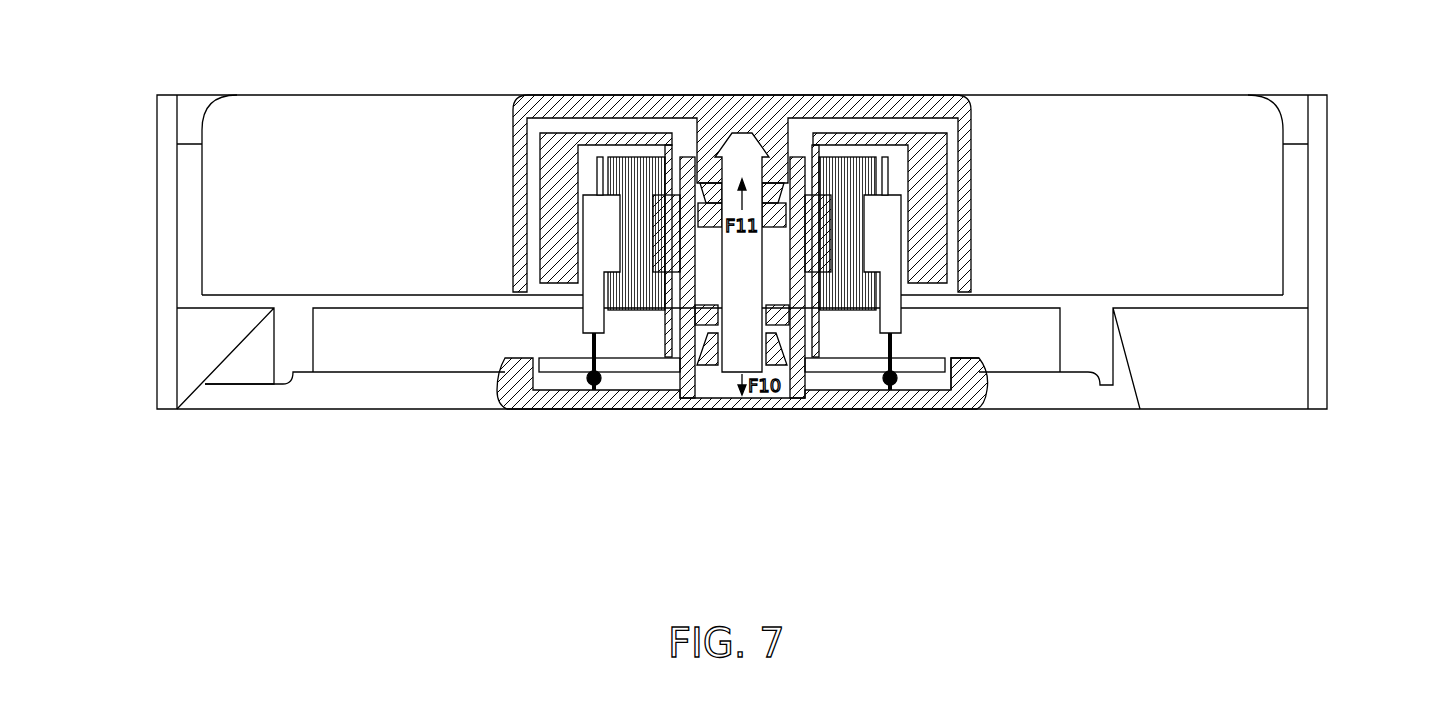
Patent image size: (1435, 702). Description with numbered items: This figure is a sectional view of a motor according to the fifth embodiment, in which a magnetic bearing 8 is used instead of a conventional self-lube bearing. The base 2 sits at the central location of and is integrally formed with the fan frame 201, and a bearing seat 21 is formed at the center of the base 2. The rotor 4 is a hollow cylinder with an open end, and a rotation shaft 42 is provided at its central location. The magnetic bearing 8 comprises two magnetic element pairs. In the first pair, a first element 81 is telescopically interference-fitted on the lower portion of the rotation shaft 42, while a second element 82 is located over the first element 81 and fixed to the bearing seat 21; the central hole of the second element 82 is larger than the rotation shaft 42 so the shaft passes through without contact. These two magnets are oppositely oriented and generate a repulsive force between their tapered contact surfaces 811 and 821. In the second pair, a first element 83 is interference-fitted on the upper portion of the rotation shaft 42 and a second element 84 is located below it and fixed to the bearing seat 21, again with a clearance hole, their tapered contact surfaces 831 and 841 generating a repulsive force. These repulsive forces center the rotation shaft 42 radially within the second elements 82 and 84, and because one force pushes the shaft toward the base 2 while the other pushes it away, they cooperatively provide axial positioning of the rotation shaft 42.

The base 2 is at (931, 412).
The bearing seat 21 is at (810, 386).
The fan frame 201 is at (1327, 356).
The rotor 4 is at (888, 95).
The rotation shaft 42 is at (745, 134).
The magnetic bearing 8 is at (743, 331).
The first element 81 is at (699, 368).
The tapered contact surface 811 is at (678, 345).
The second element 82 is at (662, 335).
The tapered contact surface 821 is at (712, 358).
The first element 83 is at (778, 183).
The tapered contact surface 831 is at (700, 200).
The second element 84 is at (800, 160).
The tapered contact surface 841 is at (718, 182).